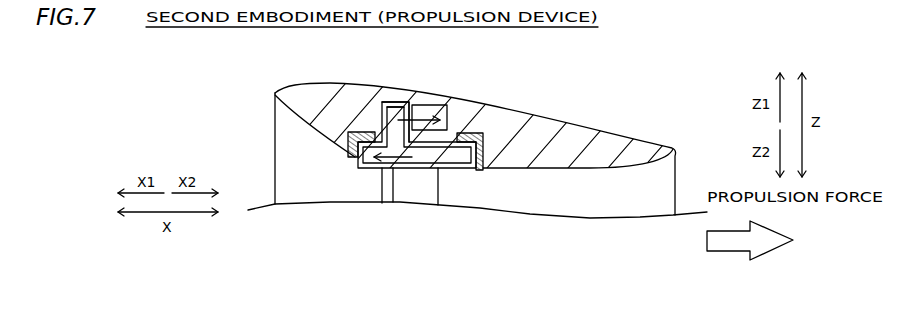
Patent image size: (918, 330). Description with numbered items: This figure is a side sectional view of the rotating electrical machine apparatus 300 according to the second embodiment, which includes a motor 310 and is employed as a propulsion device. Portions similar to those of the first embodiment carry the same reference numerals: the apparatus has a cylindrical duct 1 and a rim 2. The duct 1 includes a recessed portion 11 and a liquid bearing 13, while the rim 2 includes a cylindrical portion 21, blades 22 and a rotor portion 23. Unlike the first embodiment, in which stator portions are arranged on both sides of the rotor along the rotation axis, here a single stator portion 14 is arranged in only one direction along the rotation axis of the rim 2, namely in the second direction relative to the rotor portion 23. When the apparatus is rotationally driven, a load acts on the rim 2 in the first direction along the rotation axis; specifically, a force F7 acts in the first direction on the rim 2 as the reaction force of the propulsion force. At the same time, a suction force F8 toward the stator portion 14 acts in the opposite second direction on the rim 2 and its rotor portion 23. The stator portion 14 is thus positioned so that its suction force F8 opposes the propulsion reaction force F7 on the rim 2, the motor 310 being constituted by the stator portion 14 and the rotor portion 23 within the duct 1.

The duct 1 is at (490, 104).
The rim 2 is at (444, 172).
The recessed portion 11 is at (402, 101).
The liquid bearing 13 is at (347, 140).
The stator portion 14 is at (430, 104).
The cylindrical portion 21 is at (368, 156).
The blades 22 is at (437, 200).
The rotor portion 23 is at (388, 101).
The rotating electrical machine apparatus 300 is at (560, 92).
The motor 310 is at (486, 175).
The force F7 is at (386, 170).
The suction force F8 is at (425, 113).